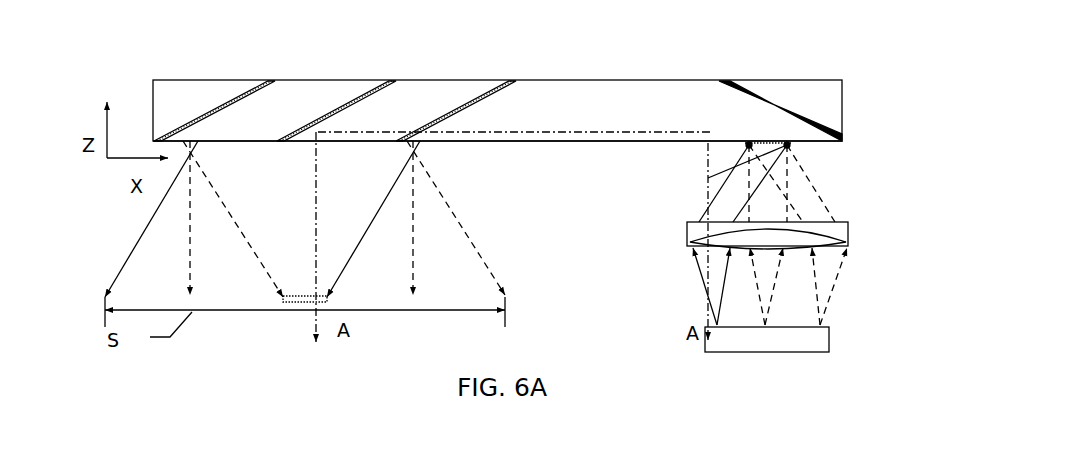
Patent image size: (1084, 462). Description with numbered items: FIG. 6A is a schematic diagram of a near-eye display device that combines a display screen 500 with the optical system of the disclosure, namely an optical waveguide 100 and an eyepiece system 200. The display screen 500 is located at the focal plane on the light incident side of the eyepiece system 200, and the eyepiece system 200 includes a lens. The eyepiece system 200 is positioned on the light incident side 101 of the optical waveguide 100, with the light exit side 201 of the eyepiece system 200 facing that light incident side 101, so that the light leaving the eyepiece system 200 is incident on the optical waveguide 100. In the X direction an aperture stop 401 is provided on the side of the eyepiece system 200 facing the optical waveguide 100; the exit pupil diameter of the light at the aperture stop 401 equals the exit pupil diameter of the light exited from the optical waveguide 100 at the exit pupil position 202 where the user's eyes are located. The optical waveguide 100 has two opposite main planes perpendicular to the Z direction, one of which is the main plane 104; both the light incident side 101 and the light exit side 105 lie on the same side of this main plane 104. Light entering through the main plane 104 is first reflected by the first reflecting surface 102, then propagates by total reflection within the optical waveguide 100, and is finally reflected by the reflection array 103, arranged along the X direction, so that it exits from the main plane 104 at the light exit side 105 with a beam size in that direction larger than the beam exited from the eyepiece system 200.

The optical waveguide 100 is at (497, 88).
The light incident side 101 is at (824, 158).
The first reflecting surface 102 is at (754, 90).
The reflection array 103 is at (396, 84).
The main plane 104 is at (497, 171).
The light exit side 105 is at (203, 87).
The eyepiece system 200 is at (833, 228).
The light exit side 201 is at (845, 183).
The exit pupil position 202 is at (265, 326).
The aperture stop 401 is at (708, 178).
The display screen 500 is at (818, 341).